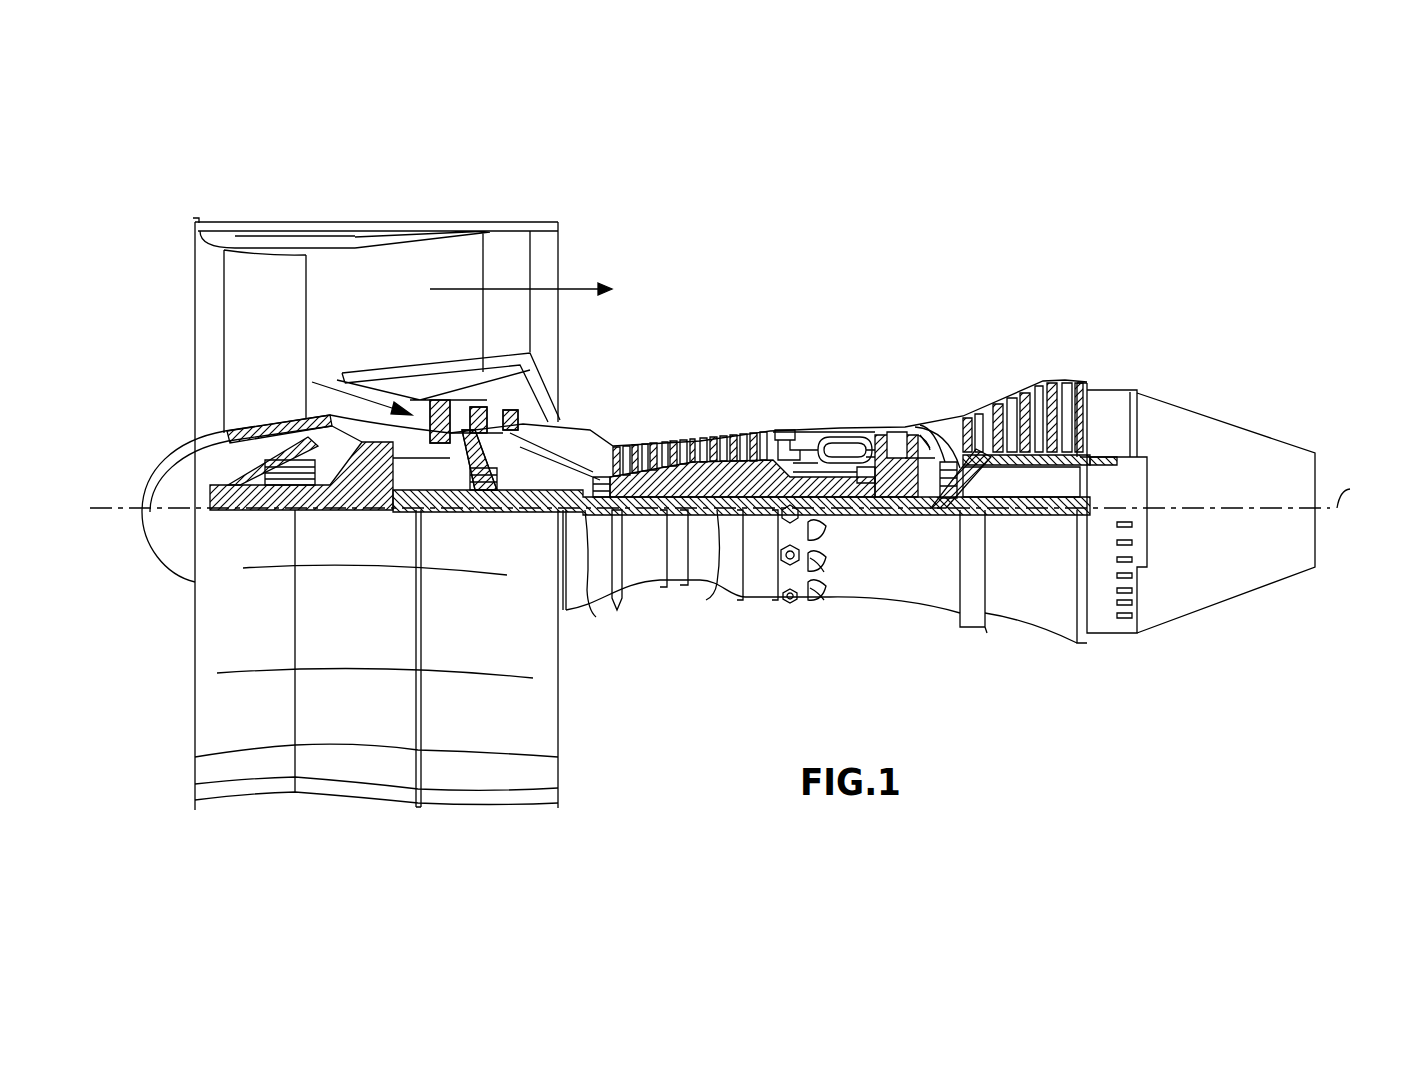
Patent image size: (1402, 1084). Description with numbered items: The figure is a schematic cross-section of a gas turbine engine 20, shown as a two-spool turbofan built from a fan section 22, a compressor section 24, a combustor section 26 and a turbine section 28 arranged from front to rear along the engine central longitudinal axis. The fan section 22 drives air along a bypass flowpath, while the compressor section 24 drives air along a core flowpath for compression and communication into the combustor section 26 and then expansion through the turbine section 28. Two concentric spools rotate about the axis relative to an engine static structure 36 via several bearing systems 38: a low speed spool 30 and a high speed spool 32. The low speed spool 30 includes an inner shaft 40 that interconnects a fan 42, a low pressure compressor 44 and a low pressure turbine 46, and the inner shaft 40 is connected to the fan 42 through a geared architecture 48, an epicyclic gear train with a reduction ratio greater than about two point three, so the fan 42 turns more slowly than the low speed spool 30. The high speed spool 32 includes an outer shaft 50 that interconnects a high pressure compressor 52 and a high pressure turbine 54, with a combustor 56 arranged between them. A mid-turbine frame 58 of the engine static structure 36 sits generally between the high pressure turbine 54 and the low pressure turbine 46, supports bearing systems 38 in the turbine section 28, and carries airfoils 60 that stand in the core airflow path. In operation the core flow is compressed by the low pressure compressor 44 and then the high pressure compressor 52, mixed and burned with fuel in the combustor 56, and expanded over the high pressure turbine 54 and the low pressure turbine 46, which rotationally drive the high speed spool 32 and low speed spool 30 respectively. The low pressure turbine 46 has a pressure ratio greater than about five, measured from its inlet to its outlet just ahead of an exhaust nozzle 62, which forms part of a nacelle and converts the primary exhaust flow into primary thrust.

The gas turbine engine 20 is at (843, 272).
The fan section 22 is at (302, 210).
The compressor section 24 is at (600, 404).
The combustor section 26 is at (823, 393).
The turbine section 28 is at (971, 356).
The low speed spool 30 is at (695, 565).
The high speed spool 32 is at (757, 452).
The engine static structure 36 is at (865, 582).
The bearing systems 38 is at (520, 510).
The inner shaft 40 is at (607, 573).
The fan 42 is at (282, 357).
The low pressure compressor 44 is at (478, 420).
The low pressure turbine 46 is at (1023, 407).
The geared architecture 48 is at (382, 497).
The outer shaft 50 is at (850, 508).
The high pressure compressor 52 is at (688, 468).
The high pressure turbine 54 is at (893, 428).
The combustor 56 is at (830, 447).
The mid-turbine frame 58 is at (937, 443).
The airfoils 60 is at (975, 482).
The exhaust nozzle 62 is at (1218, 440).